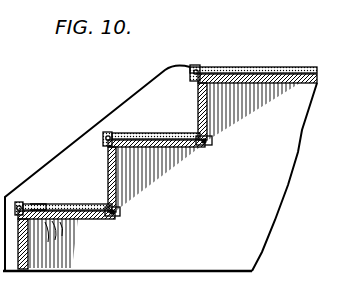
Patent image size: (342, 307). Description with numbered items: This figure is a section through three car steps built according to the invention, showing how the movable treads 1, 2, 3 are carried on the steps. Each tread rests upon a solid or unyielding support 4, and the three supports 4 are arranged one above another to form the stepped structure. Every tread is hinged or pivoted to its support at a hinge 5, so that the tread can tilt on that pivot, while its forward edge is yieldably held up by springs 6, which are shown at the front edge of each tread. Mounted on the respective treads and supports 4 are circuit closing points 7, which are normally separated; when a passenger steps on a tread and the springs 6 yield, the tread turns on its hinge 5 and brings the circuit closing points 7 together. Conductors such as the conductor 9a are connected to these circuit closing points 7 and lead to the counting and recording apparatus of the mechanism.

The movable tread 1 is at (246, 68).
The movable tread 2 is at (148, 133).
The movable tread 3 is at (65, 204).
The solid support 4 is at (165, 149).
The hinge 5 is at (210, 142).
The spring 6 is at (112, 133).
The circuit closing point 7 is at (40, 205).
The conductor 9a is at (57, 223).